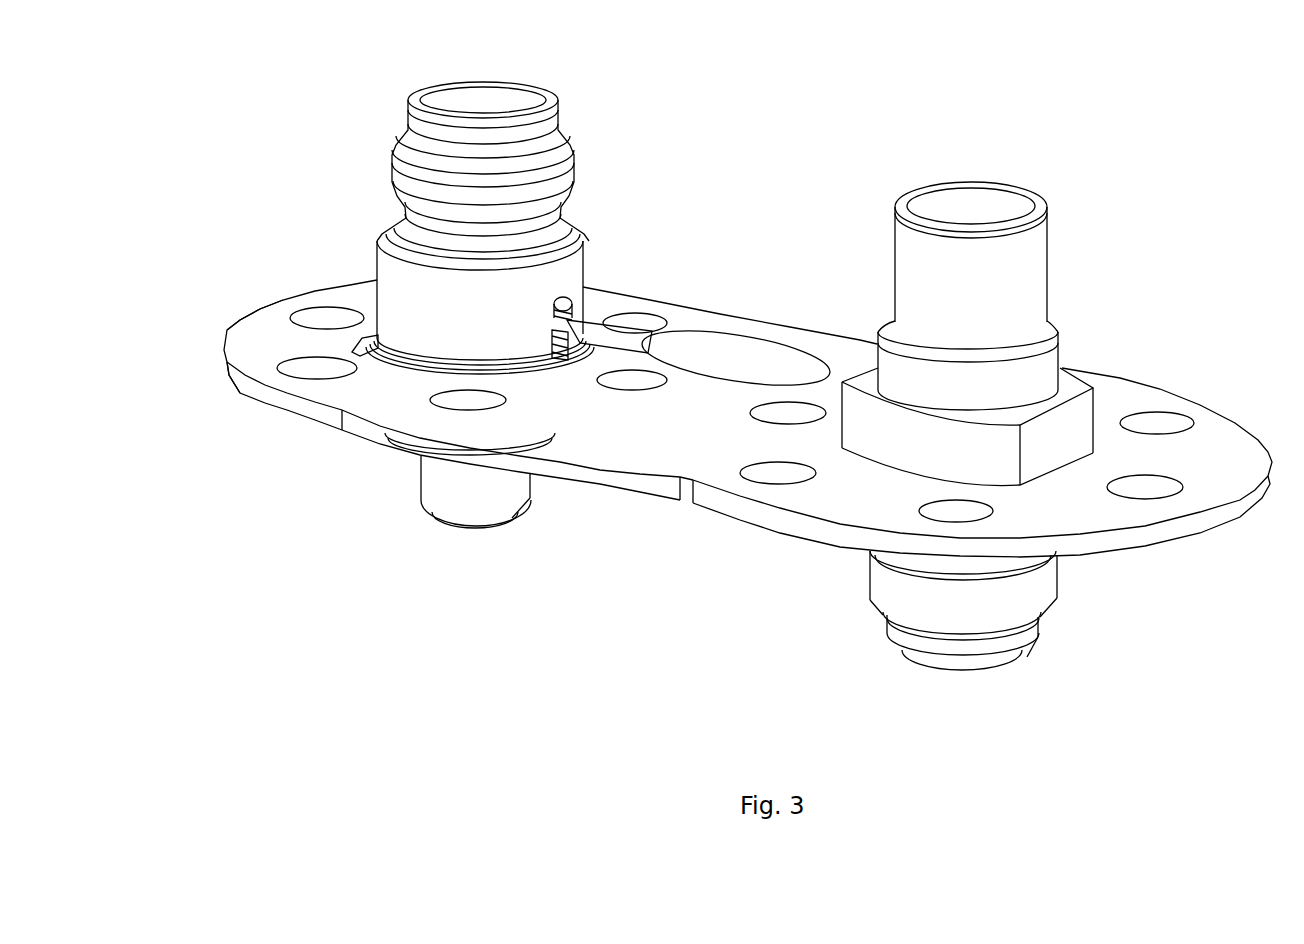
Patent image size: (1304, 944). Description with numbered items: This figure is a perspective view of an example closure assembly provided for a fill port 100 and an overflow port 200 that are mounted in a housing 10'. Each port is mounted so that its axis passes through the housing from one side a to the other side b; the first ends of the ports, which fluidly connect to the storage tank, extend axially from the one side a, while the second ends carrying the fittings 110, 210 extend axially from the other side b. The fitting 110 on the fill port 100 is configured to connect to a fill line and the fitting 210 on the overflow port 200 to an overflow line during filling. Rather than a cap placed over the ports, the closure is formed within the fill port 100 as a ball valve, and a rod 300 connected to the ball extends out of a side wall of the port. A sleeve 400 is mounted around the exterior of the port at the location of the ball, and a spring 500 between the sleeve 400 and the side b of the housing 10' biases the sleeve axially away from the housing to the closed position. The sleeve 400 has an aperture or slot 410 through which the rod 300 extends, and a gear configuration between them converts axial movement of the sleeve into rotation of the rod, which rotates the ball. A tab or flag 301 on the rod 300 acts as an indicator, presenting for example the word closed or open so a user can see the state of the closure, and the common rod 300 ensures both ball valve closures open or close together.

The housing 10' is at (748, 418).
The fill port 100 is at (487, 502).
The fitting 110 is at (560, 127).
The overflow port 200 is at (1042, 592).
The fitting 210 is at (997, 208).
The rod 300 is at (601, 338).
The tab or flag 301 is at (762, 347).
The sleeve 400 is at (582, 253).
The aperture or slot 410 is at (572, 313).
The spring 500 is at (373, 352).
The side of the housing a is at (252, 399).
The other side of the housing b is at (260, 346).